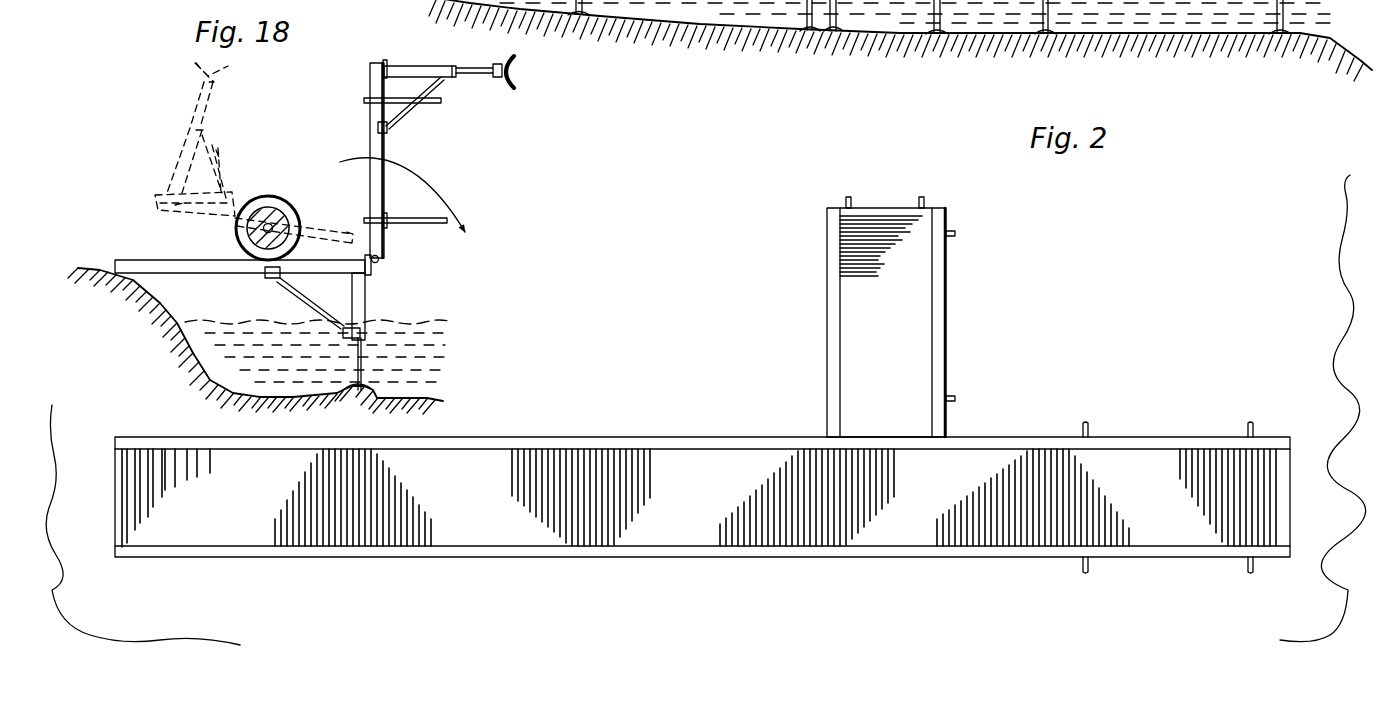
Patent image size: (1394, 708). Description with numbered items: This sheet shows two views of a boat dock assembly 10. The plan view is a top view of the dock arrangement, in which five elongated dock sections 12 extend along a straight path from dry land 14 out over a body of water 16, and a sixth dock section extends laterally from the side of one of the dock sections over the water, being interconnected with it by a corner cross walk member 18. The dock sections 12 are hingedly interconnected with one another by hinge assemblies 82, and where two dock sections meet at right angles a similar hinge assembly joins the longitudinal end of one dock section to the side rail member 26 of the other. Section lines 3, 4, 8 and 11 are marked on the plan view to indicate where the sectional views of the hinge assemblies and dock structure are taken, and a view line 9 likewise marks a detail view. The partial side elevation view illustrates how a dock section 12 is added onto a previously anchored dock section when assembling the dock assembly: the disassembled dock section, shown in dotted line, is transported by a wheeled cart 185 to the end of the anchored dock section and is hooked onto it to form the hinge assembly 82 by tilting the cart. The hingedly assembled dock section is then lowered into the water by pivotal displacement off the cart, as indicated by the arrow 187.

In FIG. 2, the section line 3- 3 is at (1302, 542).
In FIG. 2, the section line 4- 4 is at (908, 418).
In FIG. 2, the section line 8- 8 is at (1283, 412).
In FIG. 18, the view line 9 is at (615, 62).
In FIG. 2, the boat dock assembly 10 is at (591, 326).
In FIG. 2, the section line 11- 11 is at (1247, 29).
In FIG. 18, the dock section 12 is at (364, 128).
In FIG. 2, the dock section 12 is at (504, 435).
In FIG. 2, the dry land 14 is at (92, 470).
In FIG. 2, the body of water 16 is at (1083, 355).
In FIG. 2, the corner cross walk member 18 is at (707, 437).
In FIG. 2, the side rail member 26 is at (1142, 437).
In FIG. 18, the hinge assembly 82 is at (384, 261).
In FIG. 18, the wheeled cart 185 is at (167, 222).
In FIG. 18, the arrow 187 is at (420, 163).